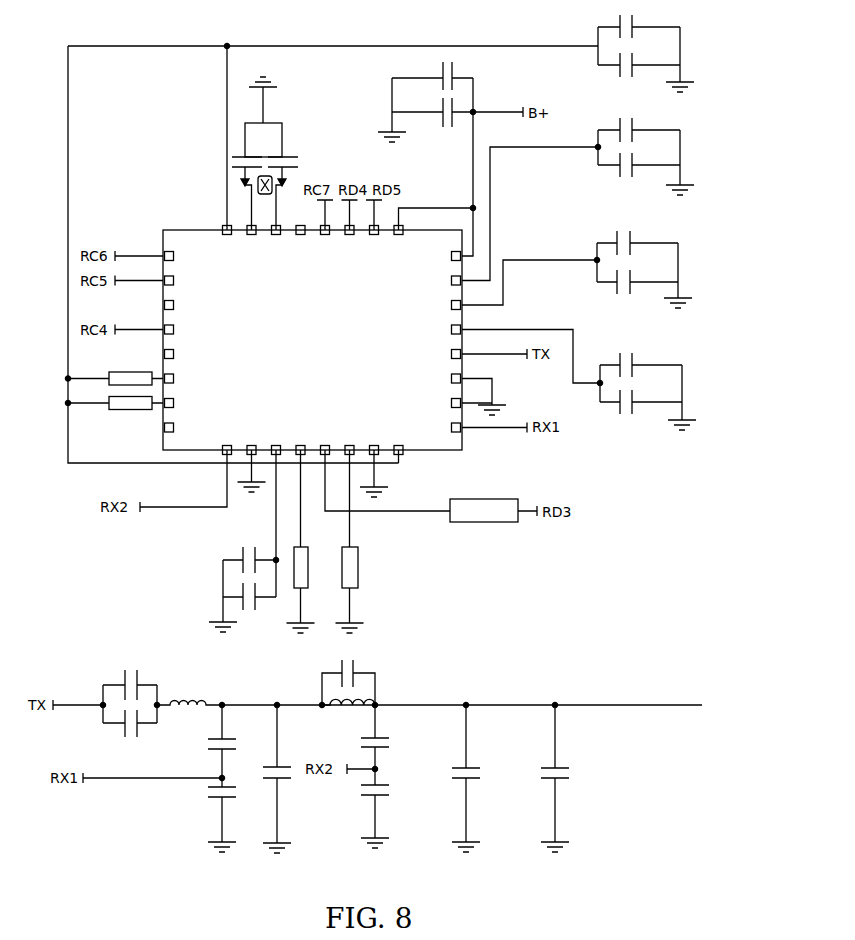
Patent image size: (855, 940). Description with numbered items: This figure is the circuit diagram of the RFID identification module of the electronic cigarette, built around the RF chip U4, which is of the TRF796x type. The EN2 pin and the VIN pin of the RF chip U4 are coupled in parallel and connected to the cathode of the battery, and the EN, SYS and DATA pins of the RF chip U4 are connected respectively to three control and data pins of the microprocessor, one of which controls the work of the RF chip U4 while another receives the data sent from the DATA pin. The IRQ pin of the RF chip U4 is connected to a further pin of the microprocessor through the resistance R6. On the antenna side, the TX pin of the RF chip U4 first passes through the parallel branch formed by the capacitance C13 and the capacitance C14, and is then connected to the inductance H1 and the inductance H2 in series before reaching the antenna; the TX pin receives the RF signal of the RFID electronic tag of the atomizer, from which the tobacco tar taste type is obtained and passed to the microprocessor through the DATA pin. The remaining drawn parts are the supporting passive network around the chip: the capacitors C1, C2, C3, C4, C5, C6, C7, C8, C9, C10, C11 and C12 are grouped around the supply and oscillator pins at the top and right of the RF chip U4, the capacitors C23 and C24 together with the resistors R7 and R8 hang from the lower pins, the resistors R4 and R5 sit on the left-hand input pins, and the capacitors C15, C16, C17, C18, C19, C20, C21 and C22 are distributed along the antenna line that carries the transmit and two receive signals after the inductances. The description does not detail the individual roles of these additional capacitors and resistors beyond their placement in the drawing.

The RF chip U4 is at (312, 340).
The capacitor C1 is at (432, 73).
The capacitor C2 is at (457, 109).
The crystal oscillator C3 is at (257, 153).
The capacitor C4 is at (286, 181).
The capacitor C5 is at (639, 24).
The capacitor C6 is at (639, 63).
The capacitor C7 is at (639, 128).
The capacitor C8 is at (639, 163).
The capacitor C9 is at (637, 241).
The capacitor C10 is at (637, 280).
The capacitor C11 is at (641, 363).
The capacitor C12 is at (641, 400).
The capacitance C13 is at (123, 677).
The capacitance C14 is at (127, 732).
The capacitor C15 is at (340, 677).
The capacitor C16 is at (268, 779).
The capacitor C17 is at (205, 741).
The capacitor C18 is at (205, 815).
The capacitor C19 is at (392, 737).
The capacitor C20 is at (392, 808).
The capacitor C21 is at (475, 778).
The capacitor C22 is at (564, 778).
The capacitor C23 is at (249, 549).
The capacitor C24 is at (250, 609).
The resistor R4 is at (115, 369).
The resistor R5 is at (115, 416).
The resistance R6 is at (431, 486).
The resistor R7 is at (309, 541).
The resistor R8 is at (358, 541).
The inductance H1 is at (189, 693).
The inductance H2 is at (348, 713).